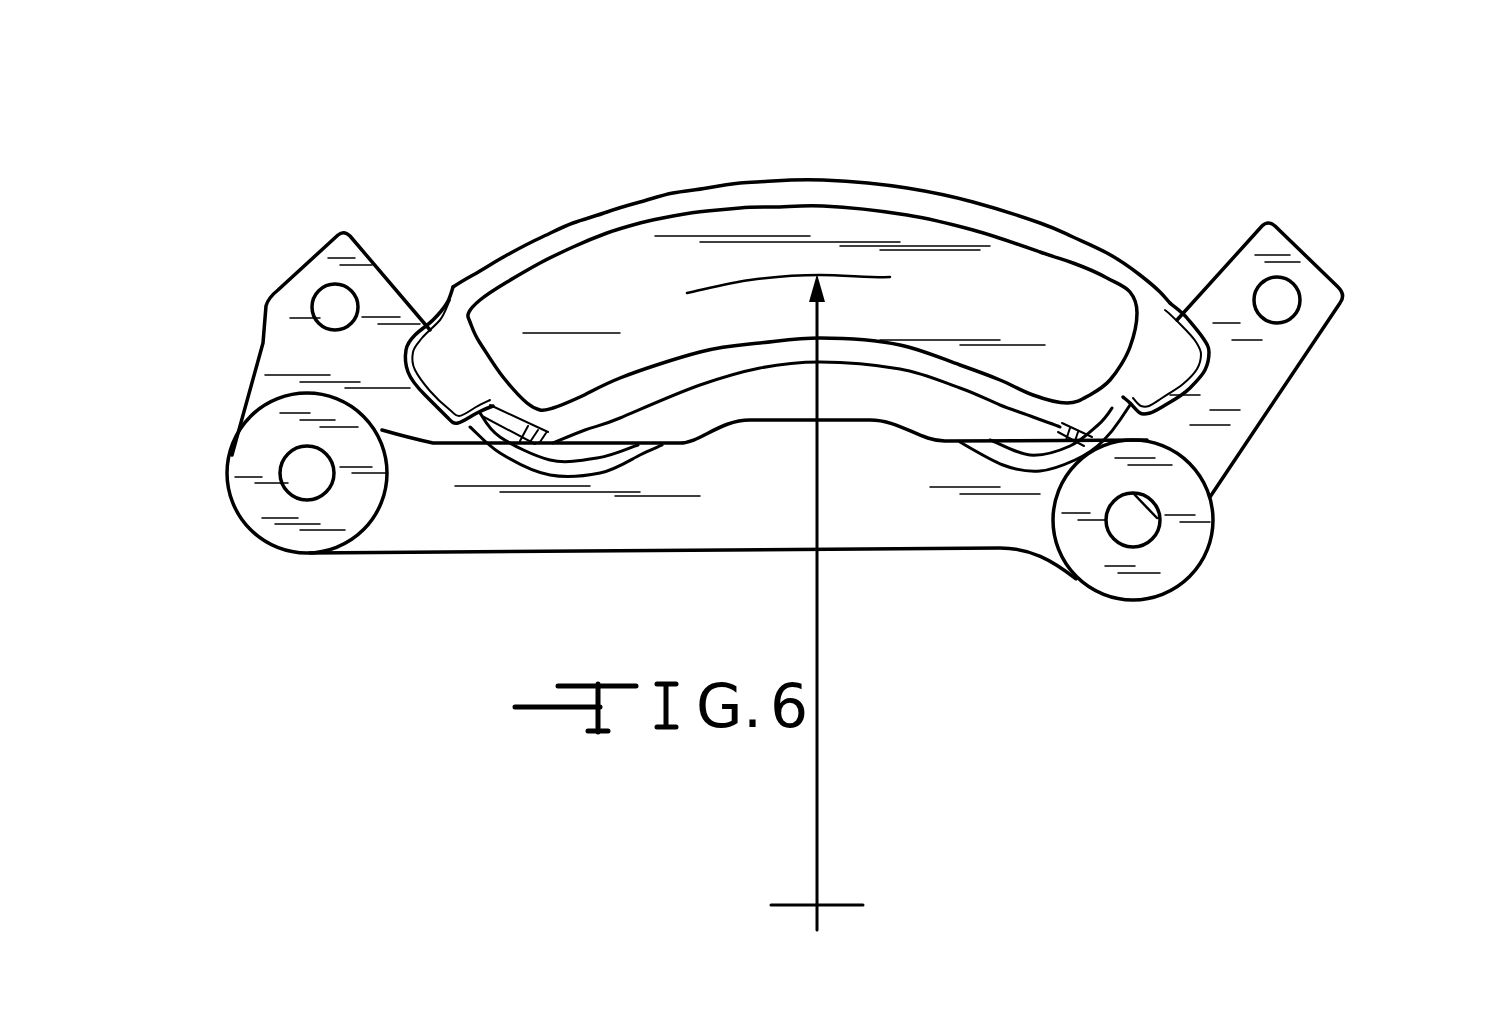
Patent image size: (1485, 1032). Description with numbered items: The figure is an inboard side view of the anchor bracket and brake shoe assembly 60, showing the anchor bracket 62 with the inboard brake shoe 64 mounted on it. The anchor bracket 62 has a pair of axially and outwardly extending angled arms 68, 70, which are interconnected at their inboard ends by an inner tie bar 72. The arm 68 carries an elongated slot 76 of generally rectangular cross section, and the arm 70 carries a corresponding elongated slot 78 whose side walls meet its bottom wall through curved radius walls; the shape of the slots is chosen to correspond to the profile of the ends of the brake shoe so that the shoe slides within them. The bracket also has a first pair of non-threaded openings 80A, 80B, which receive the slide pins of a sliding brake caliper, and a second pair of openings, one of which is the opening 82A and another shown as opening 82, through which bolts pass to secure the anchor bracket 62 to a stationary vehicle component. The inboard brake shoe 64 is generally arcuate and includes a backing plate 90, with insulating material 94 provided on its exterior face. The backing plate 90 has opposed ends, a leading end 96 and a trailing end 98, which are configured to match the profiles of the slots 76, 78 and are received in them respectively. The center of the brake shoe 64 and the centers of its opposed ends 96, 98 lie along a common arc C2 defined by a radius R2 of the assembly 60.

The anchor bracket and brake shoe assembly 60 is at (800, 323).
The anchor bracket 62 is at (800, 397).
The inboard brake shoe 64 is at (811, 240).
The arm 68 is at (282, 319).
The arm 70 is at (1321, 351).
The inner tie bar 72 is at (712, 545).
The slot 76 is at (430, 352).
The slot 78 is at (1190, 349).
The non-threaded opening 80A is at (328, 298).
The non-threaded opening 80B is at (1287, 297).
The mounting boss 82 is at (1147, 522).
The opening 82A is at (296, 473).
The backing plate 90 is at (1036, 232).
The insulating material 94 is at (1060, 282).
The leading end 96 is at (1305, 390).
The trailing end 98 is at (450, 393).
The common arc C2 is at (893, 277).
The radius R2 is at (819, 770).